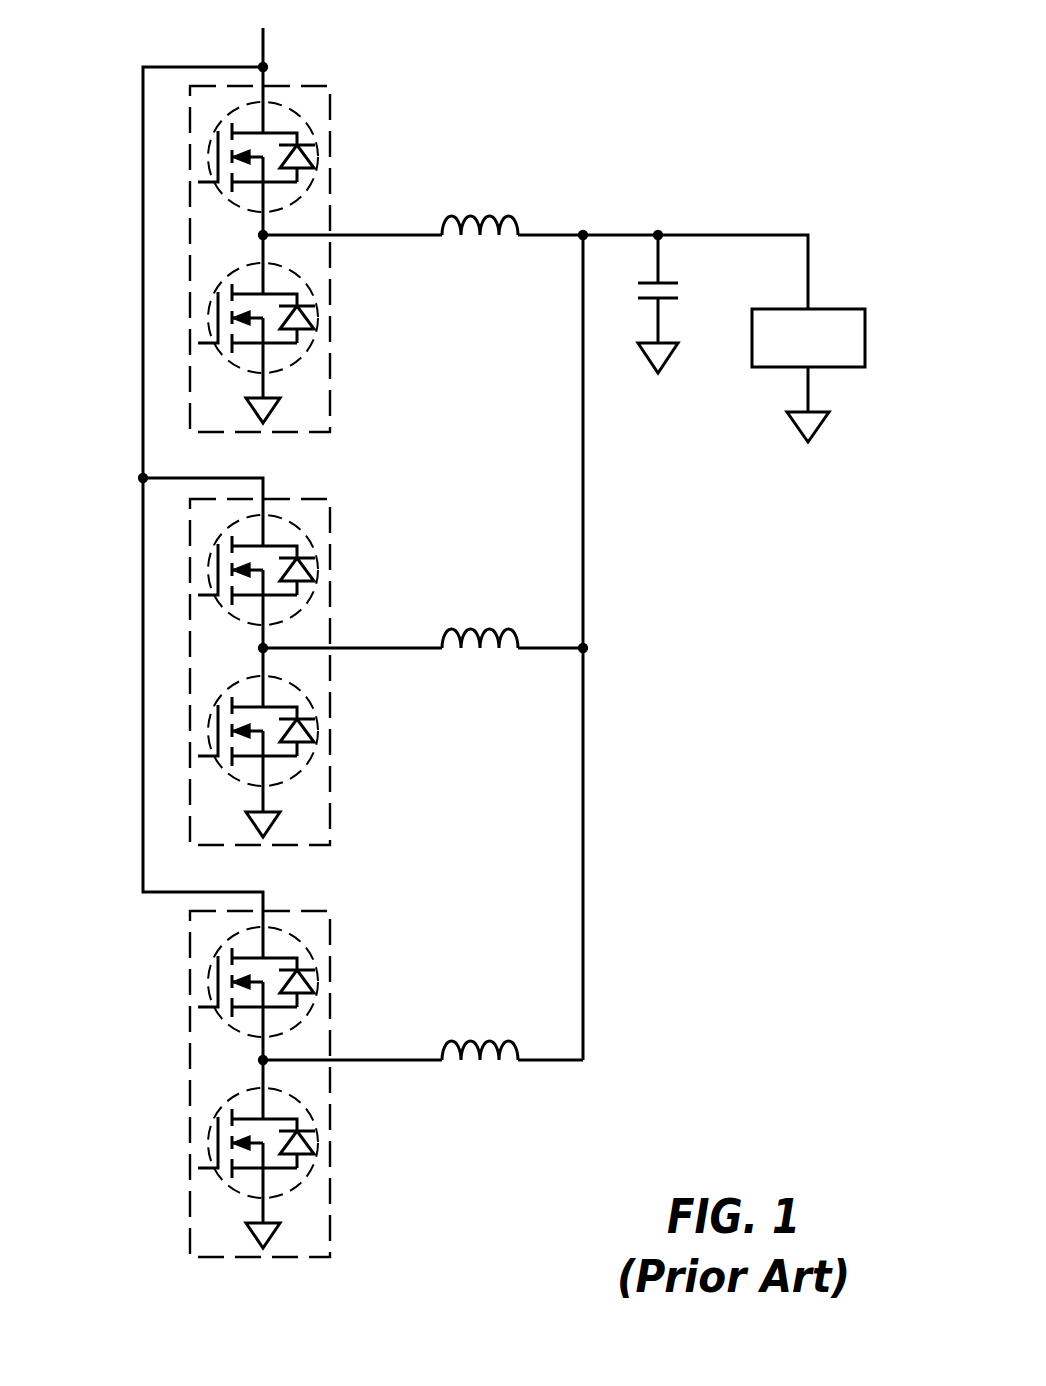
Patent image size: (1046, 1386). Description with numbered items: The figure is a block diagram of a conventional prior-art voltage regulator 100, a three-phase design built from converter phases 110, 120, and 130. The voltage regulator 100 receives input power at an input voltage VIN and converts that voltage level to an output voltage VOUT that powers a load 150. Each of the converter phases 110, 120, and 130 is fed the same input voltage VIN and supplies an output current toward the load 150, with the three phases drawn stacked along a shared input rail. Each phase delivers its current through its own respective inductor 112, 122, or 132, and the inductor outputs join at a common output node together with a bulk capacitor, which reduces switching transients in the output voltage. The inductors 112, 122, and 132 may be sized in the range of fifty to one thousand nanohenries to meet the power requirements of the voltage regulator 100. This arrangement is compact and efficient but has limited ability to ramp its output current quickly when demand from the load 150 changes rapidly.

The voltage regulator 100 is at (80, 1296).
The converter phase 110 is at (315, 433).
The inductor 112 is at (502, 221).
The converter phase 120 is at (315, 846).
The inductor 122 is at (502, 634).
The converter phase 130 is at (315, 1259).
The inductor 132 is at (502, 1046).
The load 150 is at (848, 309).